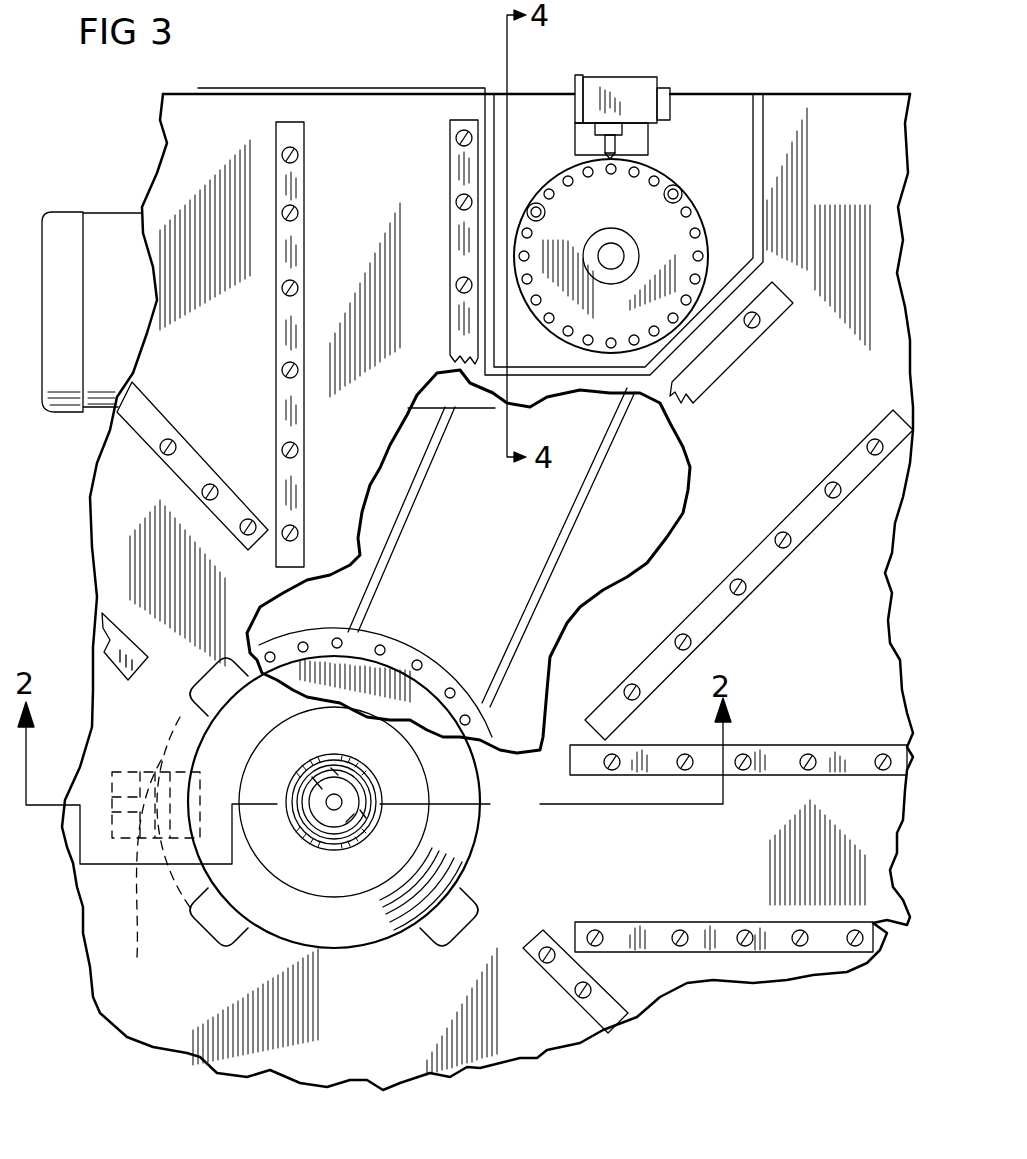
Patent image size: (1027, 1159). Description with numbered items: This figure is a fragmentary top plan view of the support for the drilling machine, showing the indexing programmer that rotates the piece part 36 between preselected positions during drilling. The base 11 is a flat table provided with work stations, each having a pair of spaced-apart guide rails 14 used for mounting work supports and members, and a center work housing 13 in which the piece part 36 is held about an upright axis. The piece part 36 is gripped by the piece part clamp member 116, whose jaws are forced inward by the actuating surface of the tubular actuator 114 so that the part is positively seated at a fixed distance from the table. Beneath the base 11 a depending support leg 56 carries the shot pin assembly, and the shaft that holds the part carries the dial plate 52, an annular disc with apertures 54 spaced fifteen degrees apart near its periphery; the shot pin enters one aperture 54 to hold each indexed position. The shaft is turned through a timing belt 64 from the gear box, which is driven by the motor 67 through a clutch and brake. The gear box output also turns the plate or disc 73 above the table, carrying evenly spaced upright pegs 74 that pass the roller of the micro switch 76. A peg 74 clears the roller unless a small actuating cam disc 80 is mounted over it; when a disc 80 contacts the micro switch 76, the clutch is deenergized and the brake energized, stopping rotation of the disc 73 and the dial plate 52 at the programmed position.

The base 11 is at (380, 123).
The work housing 13 is at (362, 820).
The guide rails 14 is at (293, 247).
The piece part 36 is at (322, 795).
The dial plate 52 is at (375, 660).
The apertures 54 is at (383, 645).
The support leg 56 is at (154, 849).
The timing belt 64 is at (567, 547).
The motor 67 is at (110, 253).
The plate or disc 73 is at (625, 239).
The pegs 74 is at (565, 181).
The micro switch 76 is at (605, 80).
The actuating cam disc 80 is at (664, 193).
The tubular actuator 114 is at (368, 817).
The piece part clamp member 116 is at (368, 785).